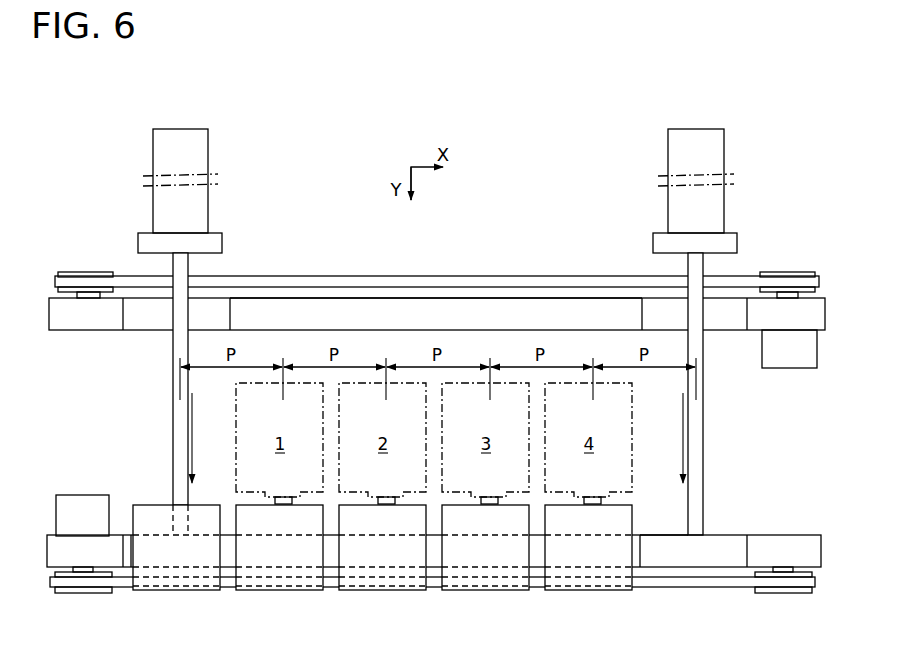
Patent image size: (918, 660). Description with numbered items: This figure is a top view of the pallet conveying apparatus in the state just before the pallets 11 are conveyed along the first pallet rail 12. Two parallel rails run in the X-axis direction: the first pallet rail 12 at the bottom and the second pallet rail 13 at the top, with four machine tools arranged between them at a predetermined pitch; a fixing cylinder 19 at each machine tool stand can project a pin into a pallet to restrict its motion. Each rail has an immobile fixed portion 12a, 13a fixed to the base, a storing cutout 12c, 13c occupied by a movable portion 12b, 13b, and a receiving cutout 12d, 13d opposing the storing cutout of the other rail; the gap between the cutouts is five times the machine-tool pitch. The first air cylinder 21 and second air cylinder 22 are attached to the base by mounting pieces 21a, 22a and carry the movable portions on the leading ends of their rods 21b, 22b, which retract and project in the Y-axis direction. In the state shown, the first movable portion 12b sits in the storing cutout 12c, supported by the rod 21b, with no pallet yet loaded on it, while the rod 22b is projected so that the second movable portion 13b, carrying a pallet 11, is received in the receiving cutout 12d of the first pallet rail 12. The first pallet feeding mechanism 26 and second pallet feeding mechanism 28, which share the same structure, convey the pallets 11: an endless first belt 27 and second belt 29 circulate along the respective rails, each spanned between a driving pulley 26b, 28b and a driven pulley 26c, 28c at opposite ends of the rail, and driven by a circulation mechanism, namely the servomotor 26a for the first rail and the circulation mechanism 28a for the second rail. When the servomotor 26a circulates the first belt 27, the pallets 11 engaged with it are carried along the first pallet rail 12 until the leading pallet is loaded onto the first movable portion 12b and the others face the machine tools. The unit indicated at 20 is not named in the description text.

The pallet 11 is at (186, 592).
The first pallet rail 12 is at (778, 532).
The fixed portion of the first pallet rail 12a is at (758, 535).
The first movable portion 12b is at (672, 535).
The storing cutout of the first pallet rail 12c is at (643, 553).
The receiving cutout of the first pallet rail 12d is at (125, 540).
The second pallet rail 13 is at (484, 296).
The fixed portion of the second pallet rail 13a is at (407, 298).
The second movable portion 13b is at (155, 536).
The storing cutout of the second pallet rail 13c is at (124, 318).
The receiving cutout of the second pallet rail 13d is at (643, 312).
The fixing cylinder 19 is at (304, 494).
The press unit 20 is at (694, 332).
The first air cylinder 21 is at (727, 199).
The mounting piece 21a is at (653, 238).
The rod of the first air cylinder 21b is at (703, 395).
The second air cylinder 22 is at (210, 199).
The mounting piece 22a is at (138, 238).
The rod of the second air cylinder 22b is at (173, 409).
The first pallet feeding mechanism 26 is at (74, 472).
The servomotor 26a is at (72, 495).
The driving pulley 26b is at (63, 595).
The driven pulley 26c is at (800, 595).
The first belt 27 is at (743, 593).
The second pallet feeding mechanism 28 is at (768, 376).
The circulation mechanism 28a is at (783, 368).
The driving pulley 28b is at (773, 272).
The driven pulley 28c is at (75, 272).
The second belt 29 is at (298, 276).